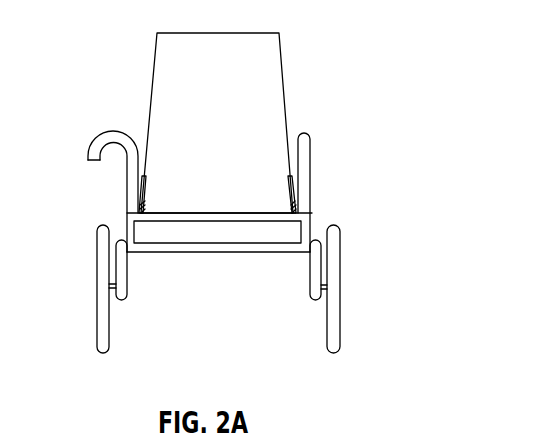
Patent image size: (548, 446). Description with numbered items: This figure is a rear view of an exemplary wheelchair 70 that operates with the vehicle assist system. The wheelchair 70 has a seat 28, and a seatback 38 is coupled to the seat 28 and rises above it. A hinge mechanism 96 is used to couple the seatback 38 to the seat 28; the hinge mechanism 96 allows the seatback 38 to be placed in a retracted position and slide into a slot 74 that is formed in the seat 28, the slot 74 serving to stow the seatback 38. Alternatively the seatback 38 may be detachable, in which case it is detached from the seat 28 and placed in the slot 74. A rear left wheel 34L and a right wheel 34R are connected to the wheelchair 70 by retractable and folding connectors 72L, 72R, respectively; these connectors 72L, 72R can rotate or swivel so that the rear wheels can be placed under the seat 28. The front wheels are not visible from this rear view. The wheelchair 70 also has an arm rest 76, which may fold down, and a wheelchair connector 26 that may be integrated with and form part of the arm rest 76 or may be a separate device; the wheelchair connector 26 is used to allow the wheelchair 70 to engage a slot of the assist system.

The wheelchair 70 is at (385, 47).
The seatback 38 is at (153, 80).
The wheelchair connector 26 is at (117, 128).
The arm rest 76 is at (302, 132).
The hinge mechanism 96 is at (294, 182).
The seat 28 is at (312, 230).
The slot 74 is at (155, 232).
The rear left wheel 34L is at (97, 288).
The right wheel 34R is at (341, 279).
The retractable and folding connector 72L is at (128, 271).
The retractable and folding connector 72R is at (305, 286).